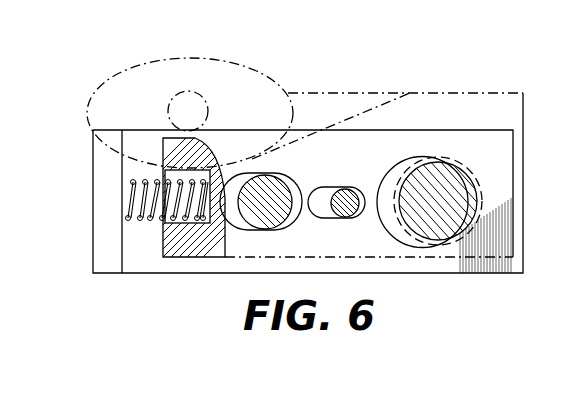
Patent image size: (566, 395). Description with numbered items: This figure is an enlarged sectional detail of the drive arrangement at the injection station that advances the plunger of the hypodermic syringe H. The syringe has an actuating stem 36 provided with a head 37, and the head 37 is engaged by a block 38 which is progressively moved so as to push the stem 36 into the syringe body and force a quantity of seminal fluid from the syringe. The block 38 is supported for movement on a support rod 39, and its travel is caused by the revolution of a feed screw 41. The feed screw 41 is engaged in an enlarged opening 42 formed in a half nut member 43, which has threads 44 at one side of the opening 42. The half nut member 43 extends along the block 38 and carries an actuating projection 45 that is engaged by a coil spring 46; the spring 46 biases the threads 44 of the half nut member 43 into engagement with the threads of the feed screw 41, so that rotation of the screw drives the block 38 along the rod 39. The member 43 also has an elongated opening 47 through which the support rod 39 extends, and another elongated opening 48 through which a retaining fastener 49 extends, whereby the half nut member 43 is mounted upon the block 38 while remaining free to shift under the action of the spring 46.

The actuating stem 36 is at (197, 92).
The head 37 is at (263, 73).
The block 38 is at (330, 93).
The support rod 39 is at (262, 220).
The feed screw 41 is at (443, 224).
The enlarged opening 42 is at (404, 160).
The half nut member 43 is at (468, 135).
The threads 44 is at (466, 203).
The actuating projection 45 is at (113, 225).
The coil spring 46 is at (142, 220).
The elongated opening 47 is at (297, 189).
The elongated opening 48 is at (325, 210).
The retaining fastener 49 is at (353, 192).
The hypodermic syringe H is at (564, 92).